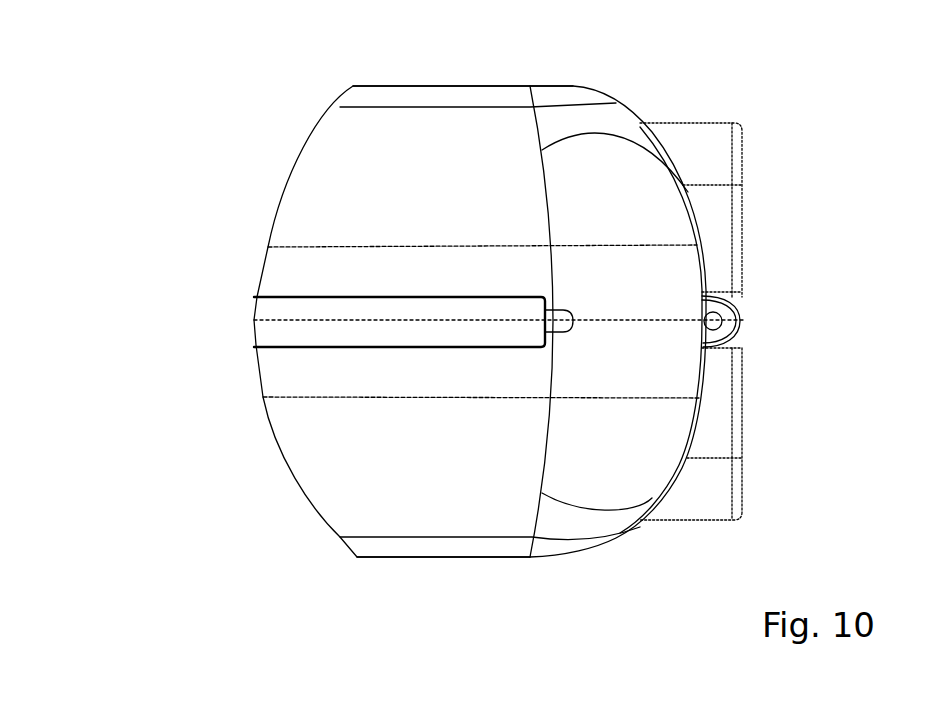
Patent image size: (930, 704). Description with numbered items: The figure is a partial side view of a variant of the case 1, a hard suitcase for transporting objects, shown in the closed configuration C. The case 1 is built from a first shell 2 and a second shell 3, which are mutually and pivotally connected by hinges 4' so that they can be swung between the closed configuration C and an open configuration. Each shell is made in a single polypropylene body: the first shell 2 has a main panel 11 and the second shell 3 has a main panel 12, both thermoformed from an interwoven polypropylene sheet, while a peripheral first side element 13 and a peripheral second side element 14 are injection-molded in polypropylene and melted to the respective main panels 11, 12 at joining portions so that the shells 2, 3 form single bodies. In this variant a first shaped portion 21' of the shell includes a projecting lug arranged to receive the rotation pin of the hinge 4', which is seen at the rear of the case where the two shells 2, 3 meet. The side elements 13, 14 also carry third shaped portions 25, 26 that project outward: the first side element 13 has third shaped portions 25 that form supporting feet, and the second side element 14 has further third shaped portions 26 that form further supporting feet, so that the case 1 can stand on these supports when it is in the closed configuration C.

The case 1 is at (158, 162).
The first shell 2 is at (296, 108).
The second shell 3 is at (272, 467).
The closed configuration C is at (270, 595).
The main panel 11 is at (446, 86).
The main panel 12 is at (453, 557).
The first side element 13 is at (627, 187).
The second side element 14 is at (597, 480).
The third shaped portions 25 is at (717, 230).
The further third shaped portions 26 is at (717, 387).
The first shaped portion 21' is at (796, 321).
The hinge 4' is at (789, 373).